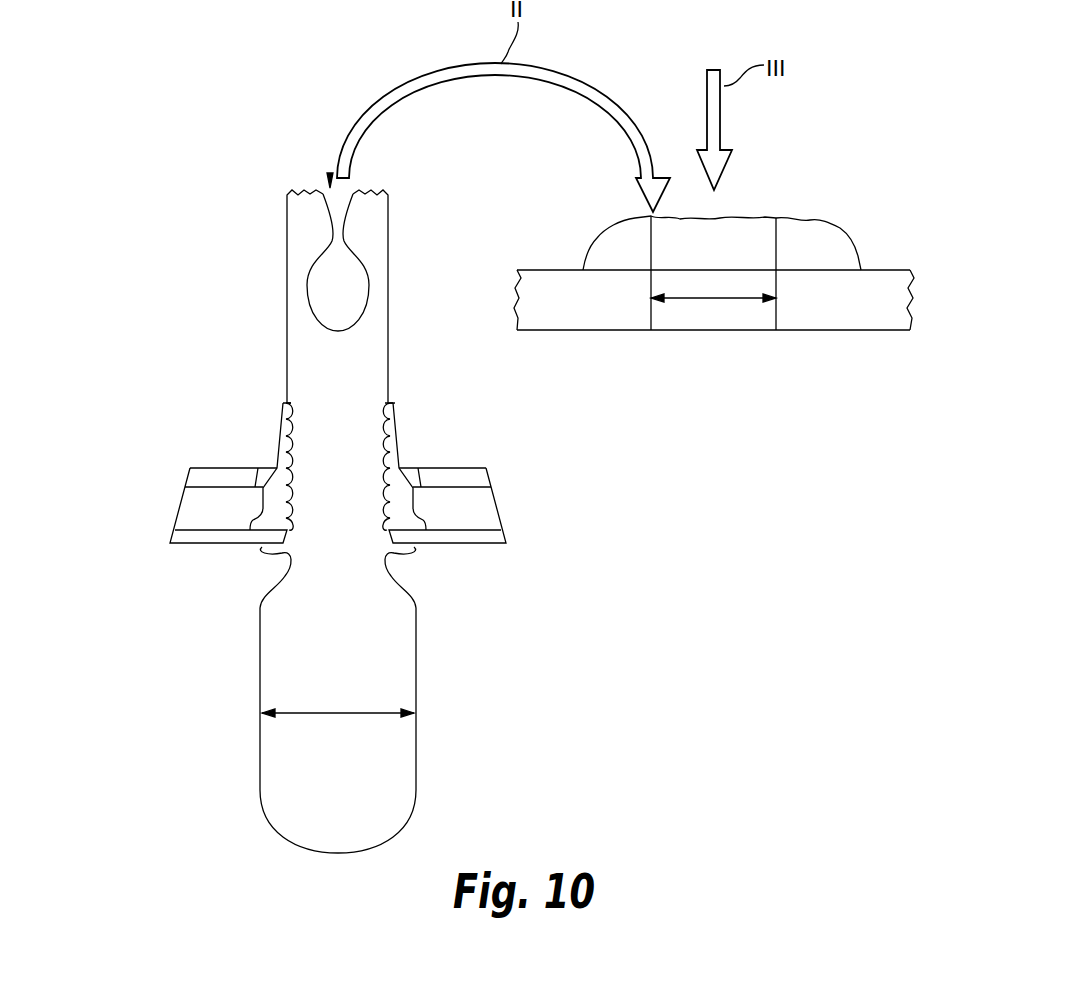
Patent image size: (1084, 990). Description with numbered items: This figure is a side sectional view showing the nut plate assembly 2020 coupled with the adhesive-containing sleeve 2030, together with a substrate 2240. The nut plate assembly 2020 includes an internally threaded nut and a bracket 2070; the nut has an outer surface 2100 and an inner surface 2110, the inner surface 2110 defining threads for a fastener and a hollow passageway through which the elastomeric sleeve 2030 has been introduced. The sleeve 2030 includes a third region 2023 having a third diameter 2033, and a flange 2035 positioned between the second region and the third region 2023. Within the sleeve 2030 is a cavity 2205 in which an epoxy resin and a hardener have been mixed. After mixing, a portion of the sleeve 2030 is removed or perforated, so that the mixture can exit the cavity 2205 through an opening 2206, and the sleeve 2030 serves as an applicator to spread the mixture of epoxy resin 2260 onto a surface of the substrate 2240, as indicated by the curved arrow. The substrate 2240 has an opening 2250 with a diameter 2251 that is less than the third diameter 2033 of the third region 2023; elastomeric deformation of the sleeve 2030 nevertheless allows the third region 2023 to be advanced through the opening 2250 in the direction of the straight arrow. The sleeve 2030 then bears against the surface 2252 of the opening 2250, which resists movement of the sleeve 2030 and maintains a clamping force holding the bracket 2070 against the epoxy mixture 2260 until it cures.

The nut plate assembly 2020 is at (295, 425).
The third region 2023 is at (286, 724).
The sleeve 2030 is at (281, 260).
The third diameter 2033 is at (338, 748).
The flange 2035 is at (260, 563).
The bracket 2070 is at (188, 470).
The outer surface 2100 is at (396, 425).
The inner surface 2110 is at (384, 418).
The cavity 2205 is at (322, 293).
The opening 2206 is at (330, 185).
The substrate 2240 is at (883, 269).
The opening 2250 is at (720, 331).
The diameter 2251 is at (700, 300).
The surface 2252 is at (772, 311).
The mixture of epoxy resin 2260 is at (583, 241).